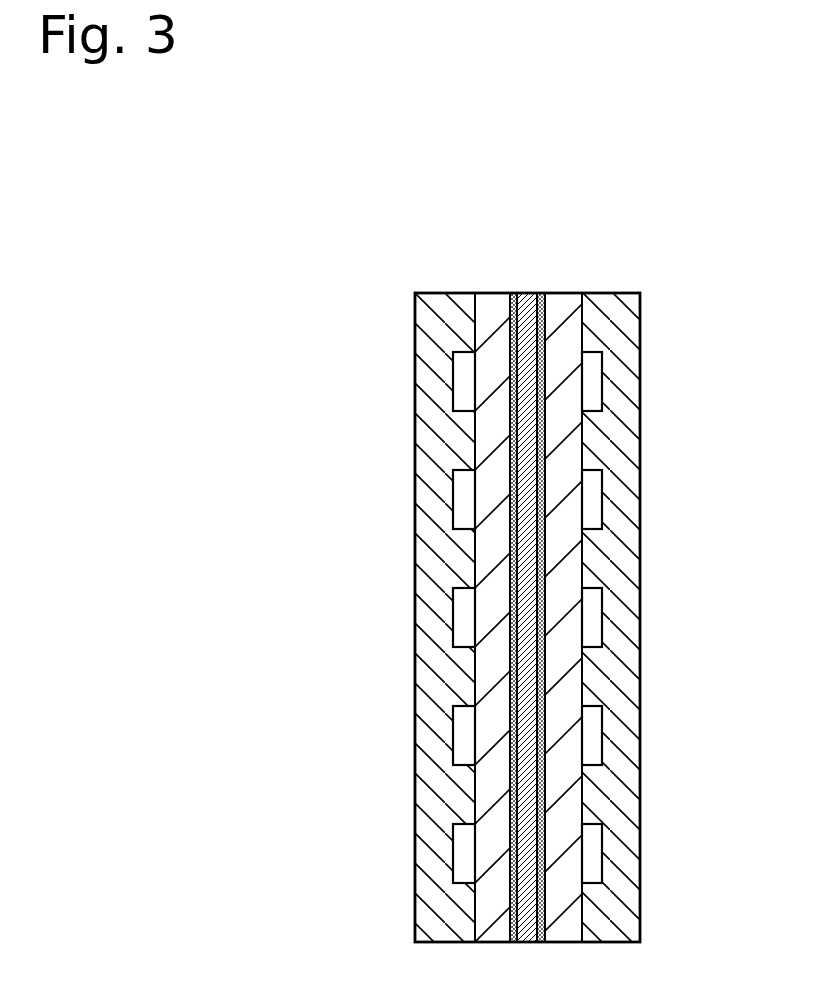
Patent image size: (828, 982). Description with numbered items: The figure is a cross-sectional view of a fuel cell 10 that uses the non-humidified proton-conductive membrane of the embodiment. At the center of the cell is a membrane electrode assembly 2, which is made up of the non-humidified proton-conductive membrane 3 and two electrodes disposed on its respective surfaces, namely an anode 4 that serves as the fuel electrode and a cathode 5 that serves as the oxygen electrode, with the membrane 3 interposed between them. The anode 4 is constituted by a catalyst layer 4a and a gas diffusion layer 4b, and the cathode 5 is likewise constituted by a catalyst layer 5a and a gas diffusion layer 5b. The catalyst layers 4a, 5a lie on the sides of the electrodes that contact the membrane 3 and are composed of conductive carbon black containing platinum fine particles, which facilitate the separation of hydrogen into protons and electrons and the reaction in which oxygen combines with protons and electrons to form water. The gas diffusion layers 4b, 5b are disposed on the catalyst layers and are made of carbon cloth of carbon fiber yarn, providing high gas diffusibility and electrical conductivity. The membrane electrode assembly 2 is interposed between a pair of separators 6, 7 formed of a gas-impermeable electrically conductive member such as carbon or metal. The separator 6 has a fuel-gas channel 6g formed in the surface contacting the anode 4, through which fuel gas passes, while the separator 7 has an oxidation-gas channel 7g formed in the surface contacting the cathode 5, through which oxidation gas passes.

The fuel cell 10 is at (610, 578).
The membrane electrode assembly 2 is at (640, 617).
The non-humidified proton-conductive membrane 3 is at (533, 455).
The anode 4 is at (614, 617).
The catalyst layer 4a is at (510, 546).
The gas diffusion layer 4b is at (505, 569).
The cathode 5 is at (645, 617).
The catalyst layer 5a is at (540, 604).
The gas diffusion layer 5b is at (563, 638).
The separator 6 is at (467, 318).
The fuel-gas channel 6g is at (467, 368).
The separator 7 is at (615, 345).
The oxidation-gas channel 7g is at (587, 399).